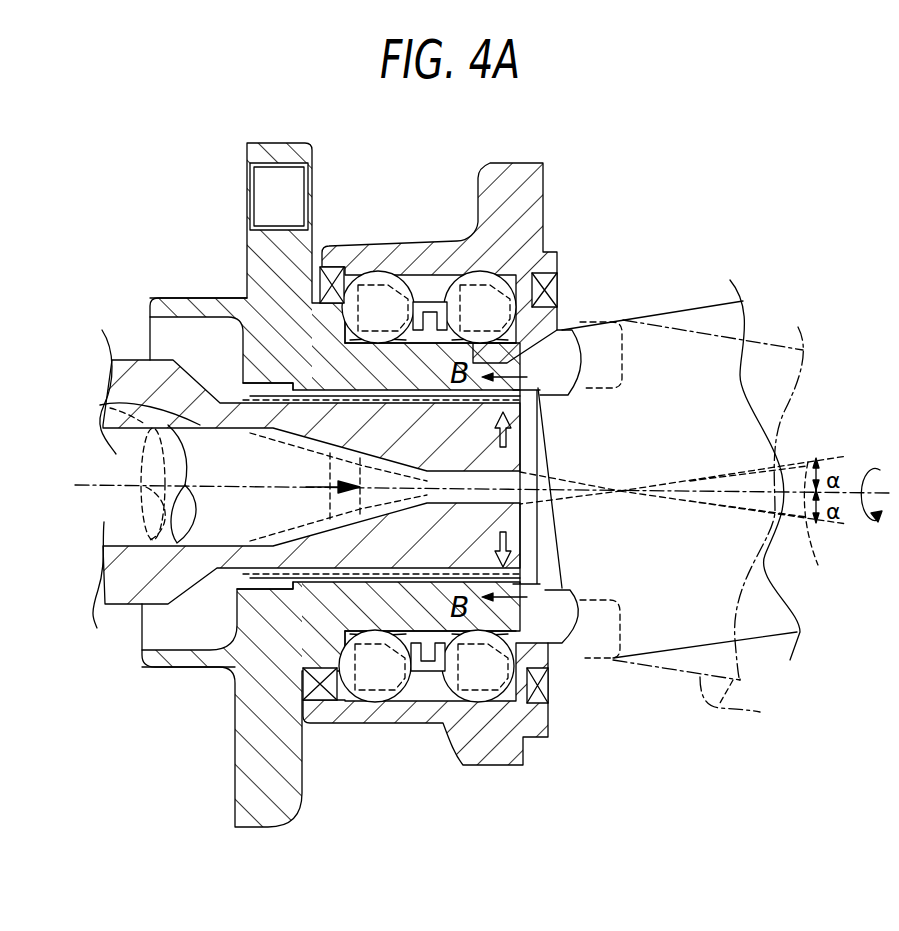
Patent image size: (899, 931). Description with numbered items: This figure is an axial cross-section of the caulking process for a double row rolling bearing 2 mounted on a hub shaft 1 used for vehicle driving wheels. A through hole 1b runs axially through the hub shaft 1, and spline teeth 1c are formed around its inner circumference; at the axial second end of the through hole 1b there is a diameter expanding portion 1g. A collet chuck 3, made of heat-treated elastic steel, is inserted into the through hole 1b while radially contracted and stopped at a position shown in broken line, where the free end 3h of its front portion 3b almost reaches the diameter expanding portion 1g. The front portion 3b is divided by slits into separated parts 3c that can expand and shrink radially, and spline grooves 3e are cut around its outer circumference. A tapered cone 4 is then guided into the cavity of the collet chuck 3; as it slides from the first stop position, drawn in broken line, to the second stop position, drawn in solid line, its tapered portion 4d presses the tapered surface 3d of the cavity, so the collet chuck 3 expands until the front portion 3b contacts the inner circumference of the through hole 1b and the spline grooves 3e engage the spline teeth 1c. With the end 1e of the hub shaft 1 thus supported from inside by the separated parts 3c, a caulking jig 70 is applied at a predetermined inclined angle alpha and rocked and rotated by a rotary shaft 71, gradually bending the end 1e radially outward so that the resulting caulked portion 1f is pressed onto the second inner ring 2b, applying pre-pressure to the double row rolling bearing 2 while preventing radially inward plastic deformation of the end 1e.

The hub shaft 1 is at (160, 280).
The through hole 1b is at (246, 298).
The spline teeth 1c is at (287, 392).
The end 1e is at (590, 396).
The caulked portion 1f is at (598, 318).
The diameter expanding portion 1g is at (548, 400).
The double row rolling bearing 2 is at (410, 190).
The second inner ring 2b is at (557, 330).
The collet chuck 3 is at (120, 350).
The front portion 3b is at (425, 420).
The separated parts 3c is at (427, 422).
The tapered surface 3d is at (393, 540).
The spline grooves 3e is at (292, 388).
The free end 3h is at (563, 466).
The tapered cone 4 is at (108, 410).
The tapered portion 4d is at (306, 487).
The caulking jig 70 is at (763, 636).
The rotary shaft 71 is at (815, 565).